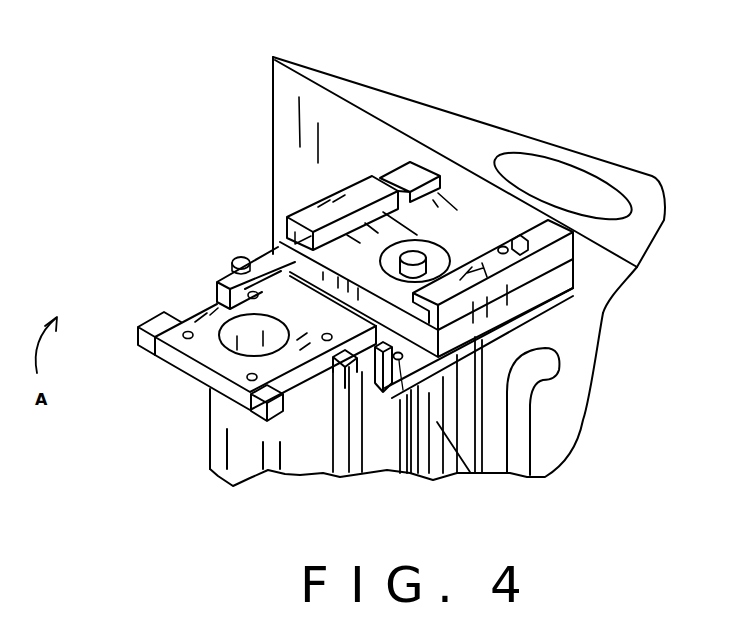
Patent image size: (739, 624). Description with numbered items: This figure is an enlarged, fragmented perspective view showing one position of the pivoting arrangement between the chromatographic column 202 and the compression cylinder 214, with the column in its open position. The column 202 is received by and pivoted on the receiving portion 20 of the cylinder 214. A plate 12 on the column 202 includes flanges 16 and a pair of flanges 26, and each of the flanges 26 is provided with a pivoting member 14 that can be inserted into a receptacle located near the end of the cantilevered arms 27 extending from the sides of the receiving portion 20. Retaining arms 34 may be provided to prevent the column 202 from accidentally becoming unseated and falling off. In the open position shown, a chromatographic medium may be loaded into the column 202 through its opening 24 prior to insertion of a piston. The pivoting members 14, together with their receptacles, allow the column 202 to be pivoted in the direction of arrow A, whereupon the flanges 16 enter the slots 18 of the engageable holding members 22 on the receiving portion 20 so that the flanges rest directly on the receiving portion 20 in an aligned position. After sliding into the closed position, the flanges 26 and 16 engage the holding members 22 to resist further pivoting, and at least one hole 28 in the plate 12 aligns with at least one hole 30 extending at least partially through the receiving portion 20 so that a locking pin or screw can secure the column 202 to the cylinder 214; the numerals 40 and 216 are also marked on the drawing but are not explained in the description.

The plate 12 is at (186, 362).
The pivoting member 14 is at (437, 422).
The flanges 16 is at (158, 315).
The slots 18 is at (387, 162).
The receiving portion 20 is at (435, 207).
The engageable holding members 22 is at (333, 200).
The opening 24 is at (240, 333).
The flanges 26 is at (237, 258).
The cantilevered arms 27 is at (268, 288).
The hole 28 is at (252, 381).
The hole 30 is at (513, 236).
The retaining arms 34 is at (372, 375).
The back plate 40 is at (177, 140).
The chromatographic column 202 is at (236, 458).
The cylinder 214 is at (470, 472).
The hook 216 is at (530, 432).